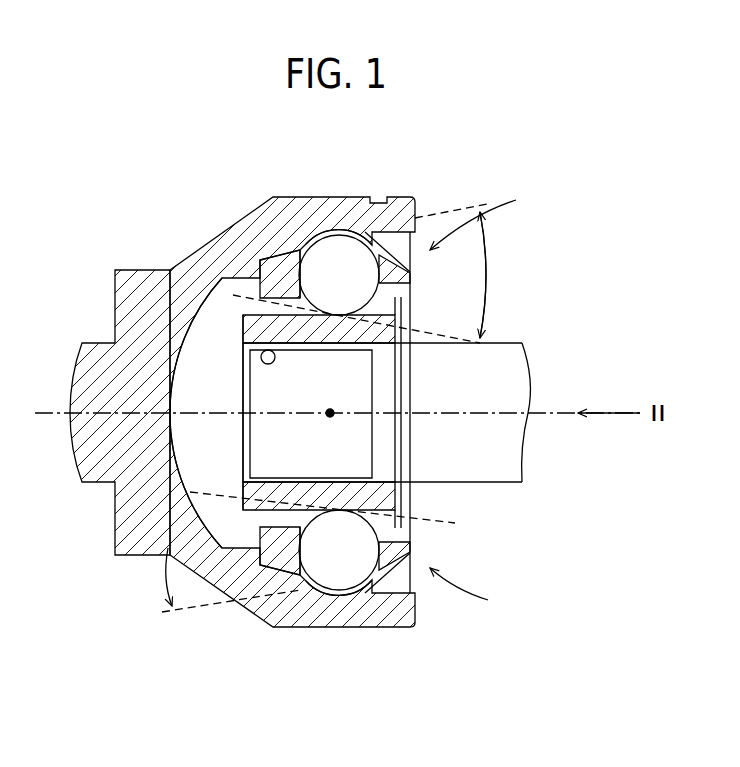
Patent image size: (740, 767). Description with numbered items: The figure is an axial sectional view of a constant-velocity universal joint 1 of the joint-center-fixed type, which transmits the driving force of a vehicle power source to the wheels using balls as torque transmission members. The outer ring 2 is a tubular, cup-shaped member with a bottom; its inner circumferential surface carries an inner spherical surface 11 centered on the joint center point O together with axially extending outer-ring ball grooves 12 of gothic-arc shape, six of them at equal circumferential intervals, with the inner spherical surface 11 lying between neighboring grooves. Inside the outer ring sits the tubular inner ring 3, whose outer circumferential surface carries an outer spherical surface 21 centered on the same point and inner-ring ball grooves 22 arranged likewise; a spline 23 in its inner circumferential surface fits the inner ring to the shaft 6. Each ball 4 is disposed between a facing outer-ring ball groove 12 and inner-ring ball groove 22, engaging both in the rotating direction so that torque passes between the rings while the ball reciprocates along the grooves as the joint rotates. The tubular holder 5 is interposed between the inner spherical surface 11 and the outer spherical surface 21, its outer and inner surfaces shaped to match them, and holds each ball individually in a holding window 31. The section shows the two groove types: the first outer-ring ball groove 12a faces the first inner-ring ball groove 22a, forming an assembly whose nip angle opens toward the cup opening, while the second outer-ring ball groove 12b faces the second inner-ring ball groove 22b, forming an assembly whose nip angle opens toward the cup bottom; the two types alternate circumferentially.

The constant-velocity universal joint 1 is at (130, 240).
The outer ring 2 is at (130, 548).
The inner ring 3 is at (410, 504).
The ball 4 is at (325, 256).
The holder 5 is at (303, 572).
The shaft 6 is at (505, 470).
The inner spherical surface 11 is at (228, 252).
The outer-ring ball groove 12 is at (255, 250).
The first outer-ring ball groove 12a is at (270, 255).
The second outer-ring ball groove 12b is at (392, 592).
The outer spherical surface 21 is at (268, 560).
The inner-ring ball groove 22 is at (240, 545).
The first inner-ring ball groove 22a is at (400, 300).
The second inner-ring ball groove 22b is at (410, 533).
The spline 23 is at (258, 360).
The holding window 31 is at (362, 252).